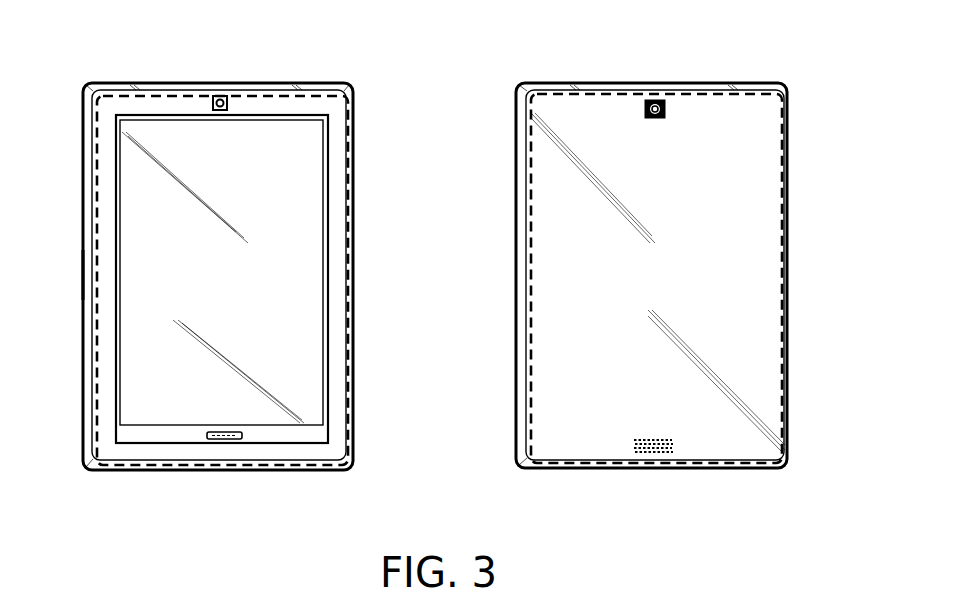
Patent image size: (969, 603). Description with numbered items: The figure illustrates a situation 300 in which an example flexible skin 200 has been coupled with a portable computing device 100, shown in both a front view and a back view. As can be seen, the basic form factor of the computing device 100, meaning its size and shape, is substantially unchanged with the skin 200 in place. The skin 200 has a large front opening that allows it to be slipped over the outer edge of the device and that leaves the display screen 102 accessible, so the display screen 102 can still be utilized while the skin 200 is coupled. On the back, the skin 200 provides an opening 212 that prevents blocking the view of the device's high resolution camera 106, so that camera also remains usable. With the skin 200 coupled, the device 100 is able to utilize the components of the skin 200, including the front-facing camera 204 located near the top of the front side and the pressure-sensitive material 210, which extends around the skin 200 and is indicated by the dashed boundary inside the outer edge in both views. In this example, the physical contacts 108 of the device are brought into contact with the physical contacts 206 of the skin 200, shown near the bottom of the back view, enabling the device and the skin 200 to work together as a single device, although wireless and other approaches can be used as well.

The computing device 100 is at (246, 272).
The display screen 102 is at (324, 215).
The high resolution camera 106 is at (653, 103).
The physical contacts 108 is at (565, 472).
The skin 200 is at (353, 272).
The front-facing camera 204 is at (221, 97).
The physical contacts 206 is at (633, 446).
The pressure-sensitive material 210 is at (348, 331).
The opening 212 is at (660, 68).
The situation 300 is at (661, 264).